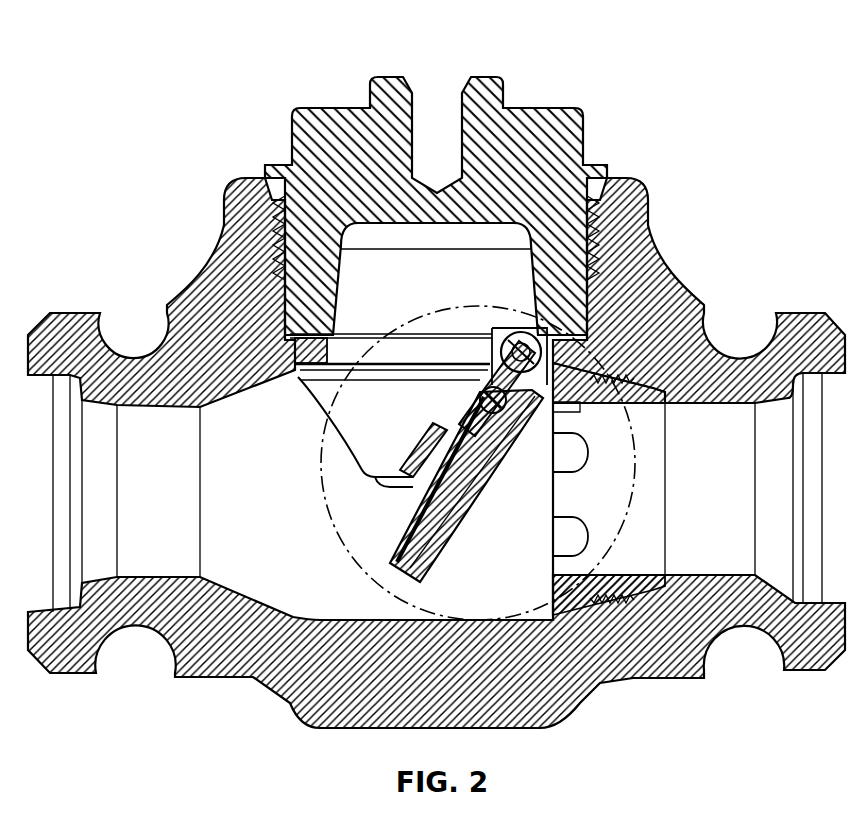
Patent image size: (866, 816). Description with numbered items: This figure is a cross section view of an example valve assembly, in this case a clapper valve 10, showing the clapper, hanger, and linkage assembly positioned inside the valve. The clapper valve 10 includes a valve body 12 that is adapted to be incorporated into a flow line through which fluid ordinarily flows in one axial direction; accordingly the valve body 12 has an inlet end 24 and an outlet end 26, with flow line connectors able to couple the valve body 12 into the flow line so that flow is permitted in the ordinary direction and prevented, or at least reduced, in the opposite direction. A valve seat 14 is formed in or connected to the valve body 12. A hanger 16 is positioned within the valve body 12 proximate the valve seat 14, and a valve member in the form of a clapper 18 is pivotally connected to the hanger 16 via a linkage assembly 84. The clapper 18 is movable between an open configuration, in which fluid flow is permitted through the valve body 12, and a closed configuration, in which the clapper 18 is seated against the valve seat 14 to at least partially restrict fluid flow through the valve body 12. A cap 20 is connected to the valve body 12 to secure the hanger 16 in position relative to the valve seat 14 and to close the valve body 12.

The clapper valve 10 is at (160, 190).
The valve body 12 is at (172, 678).
The valve seat 14 is at (640, 395).
The hanger 16 is at (323, 357).
The clapper 18 is at (437, 533).
The cap 20 is at (371, 130).
The inlet end 24 is at (790, 663).
The outlet end 26 is at (215, 678).
The linkage assembly 84 is at (513, 337).